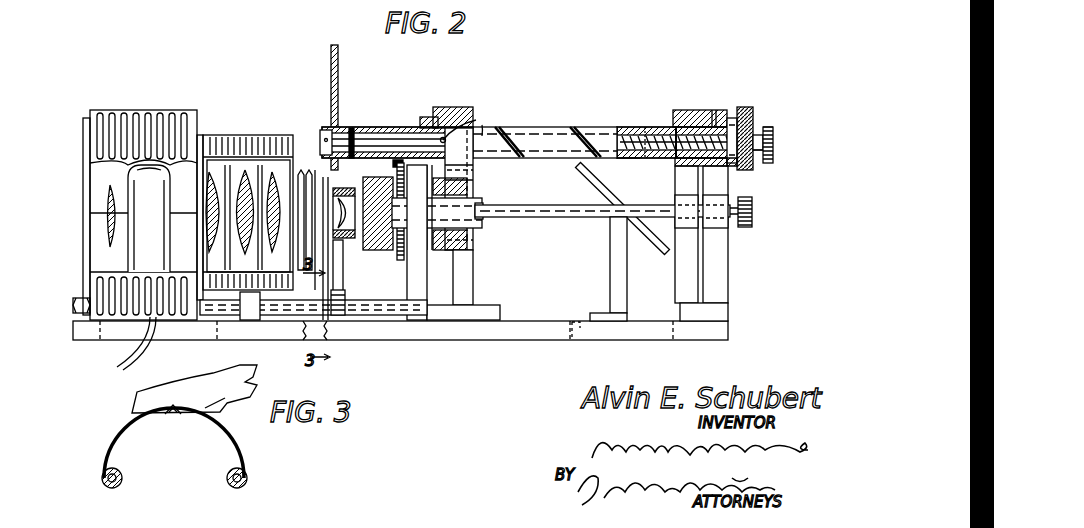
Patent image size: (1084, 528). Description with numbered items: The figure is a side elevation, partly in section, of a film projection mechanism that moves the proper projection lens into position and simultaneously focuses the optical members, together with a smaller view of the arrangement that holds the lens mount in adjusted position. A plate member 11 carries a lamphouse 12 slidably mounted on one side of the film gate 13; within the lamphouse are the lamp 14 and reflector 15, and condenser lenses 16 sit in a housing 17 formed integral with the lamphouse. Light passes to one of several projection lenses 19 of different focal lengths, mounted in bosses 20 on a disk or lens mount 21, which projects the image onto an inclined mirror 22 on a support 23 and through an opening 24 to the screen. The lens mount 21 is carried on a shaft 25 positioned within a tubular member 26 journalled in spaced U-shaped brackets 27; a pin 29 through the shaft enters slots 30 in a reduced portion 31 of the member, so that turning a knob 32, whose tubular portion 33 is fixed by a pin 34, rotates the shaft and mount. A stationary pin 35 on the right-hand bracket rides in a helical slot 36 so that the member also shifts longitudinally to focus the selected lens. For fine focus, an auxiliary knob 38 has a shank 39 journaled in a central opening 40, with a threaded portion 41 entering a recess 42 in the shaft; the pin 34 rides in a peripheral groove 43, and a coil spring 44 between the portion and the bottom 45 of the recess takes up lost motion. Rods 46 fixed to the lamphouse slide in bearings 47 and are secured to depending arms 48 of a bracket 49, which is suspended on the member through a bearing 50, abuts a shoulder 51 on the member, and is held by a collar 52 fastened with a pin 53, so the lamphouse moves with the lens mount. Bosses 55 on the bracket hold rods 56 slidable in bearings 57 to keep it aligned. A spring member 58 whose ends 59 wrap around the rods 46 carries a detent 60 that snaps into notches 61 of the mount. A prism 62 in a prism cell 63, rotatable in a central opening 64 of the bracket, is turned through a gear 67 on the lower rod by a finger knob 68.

In FIG. 2, the plate member 11 is at (88, 337).
In FIG. 2, the lamphouse 12 is at (95, 118).
In FIG. 2, the film gate 13 is at (301, 170).
In FIG. 2, the lamp 14 is at (140, 176).
In FIG. 2, the reflector 15 is at (105, 232).
In FIG. 2, the condenser lenses 16 is at (205, 188).
In FIG. 2, the housing 17 is at (218, 137).
In FIG. 2, the projection lenses 19 is at (340, 240).
In FIG. 2, the bosses 20 is at (343, 167).
In FIG. 2, the lens mount 21 is at (331, 51).
In FIG. 3, the lens mount 21 is at (223, 378).
In FIG. 2, the inclined mirror 22 is at (660, 247).
In FIG. 2, the support 23 is at (610, 275).
In FIG. 2, the opening 24 is at (580, 338).
In FIG. 2, the shaft 25 is at (405, 135).
In FIG. 2, the tubular member 26 is at (658, 135).
In FIG. 2, the U-shaped brackets 27 is at (473, 108).
In FIG. 2, the pin 29 is at (353, 128).
In FIG. 2, the slots 30 is at (349, 128).
In FIG. 2, the reduced portion 31 is at (378, 138).
In FIG. 2, the knob 32 is at (736, 125).
In FIG. 2, the tubular portion 33 is at (738, 110).
In FIG. 2, the pin 34 is at (755, 120).
In FIG. 2, the stationary pin 35 is at (688, 112).
In FIG. 2, the helical slot 36 is at (575, 127).
In FIG. 2, the auxiliary knob 38 is at (773, 147).
In FIG. 2, the shank 39 is at (760, 157).
In FIG. 2, the central opening 40 is at (773, 130).
In FIG. 2, the threaded portion 41 is at (713, 110).
In FIG. 2, the recess 42 is at (645, 127).
In FIG. 2, the peripheral groove 43 is at (732, 168).
In FIG. 2, the coil spring 44 is at (678, 127).
In FIG. 2, the bottom of recess 45 is at (630, 158).
In FIG. 2, the rods 46 is at (385, 312).
In FIG. 3, the rods 46 is at (102, 478).
In FIG. 2, the bearings 47 is at (260, 322).
In FIG. 2, the depending arms 48 is at (428, 287).
In FIG. 2, the bracket 49 is at (473, 172).
In FIG. 2, the bearing 50 is at (476, 120).
In FIG. 2, the pin 51 is at (482, 125).
In FIG. 2, the collar 52 is at (441, 107).
In FIG. 2, the pin 53 is at (440, 118).
In FIG. 2, the bosses 55 is at (462, 235).
In FIG. 2, the rods 56 is at (577, 218).
In FIG. 2, the bearings 57 is at (675, 198).
In FIG. 2, the spring member 58 is at (338, 292).
In FIG. 3, the spring member 58 is at (138, 424).
In FIG. 3, the ends 59 is at (122, 478).
In FIG. 3, the detent 60 is at (173, 420).
In FIG. 3, the notches 61 is at (214, 407).
In FIG. 2, the prism 62 is at (389, 245).
In FIG. 2, the prism cell 63 is at (443, 222).
In FIG. 2, the central opening 64 is at (455, 248).
In FIG. 2, the gear 67 is at (396, 160).
In FIG. 2, the finger knob 68 is at (752, 213).